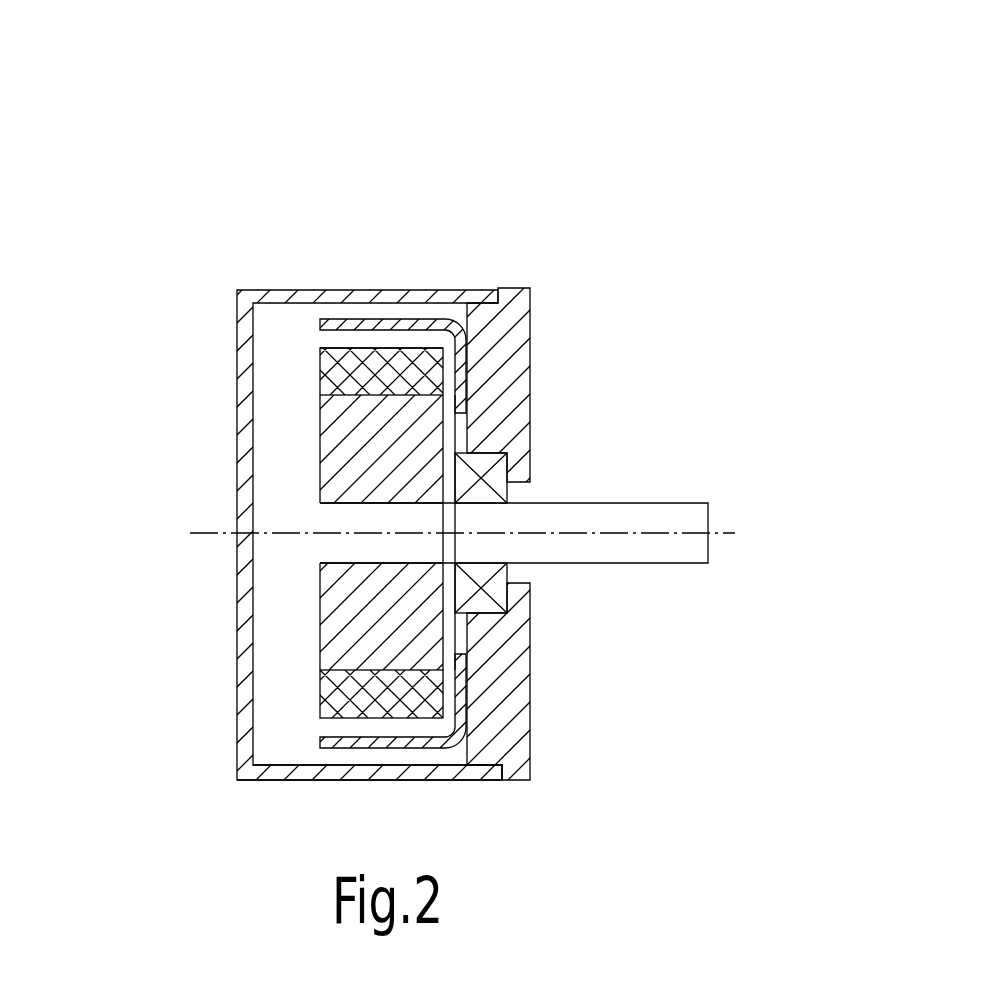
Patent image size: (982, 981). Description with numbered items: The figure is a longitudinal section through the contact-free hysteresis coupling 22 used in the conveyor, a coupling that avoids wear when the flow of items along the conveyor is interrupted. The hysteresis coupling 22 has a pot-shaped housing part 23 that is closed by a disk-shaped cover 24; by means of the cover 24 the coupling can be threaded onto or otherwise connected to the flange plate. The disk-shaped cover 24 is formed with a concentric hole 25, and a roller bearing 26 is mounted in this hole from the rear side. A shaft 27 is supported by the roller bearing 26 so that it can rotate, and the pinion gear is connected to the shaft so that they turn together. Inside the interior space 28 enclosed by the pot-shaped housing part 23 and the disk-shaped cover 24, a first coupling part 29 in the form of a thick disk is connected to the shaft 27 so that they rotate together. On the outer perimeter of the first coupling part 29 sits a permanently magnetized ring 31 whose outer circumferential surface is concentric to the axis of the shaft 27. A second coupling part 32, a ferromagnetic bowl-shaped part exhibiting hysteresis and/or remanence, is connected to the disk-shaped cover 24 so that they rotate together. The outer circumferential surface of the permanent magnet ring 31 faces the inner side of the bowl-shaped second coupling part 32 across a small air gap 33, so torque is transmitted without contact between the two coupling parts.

The hysteresis coupling 22 is at (578, 163).
The pot-shaped housing part 23 is at (293, 290).
The disk-shaped cover 24 is at (510, 372).
The concentric hole 25 is at (507, 483).
The roller bearing 26 is at (507, 607).
The shaft 27 is at (680, 517).
The interior space 28 is at (288, 713).
The first coupling part 29 is at (300, 593).
The permanently magnetized ring 31 is at (284, 368).
The second coupling part 32 is at (413, 318).
The air gap 33 is at (327, 338).